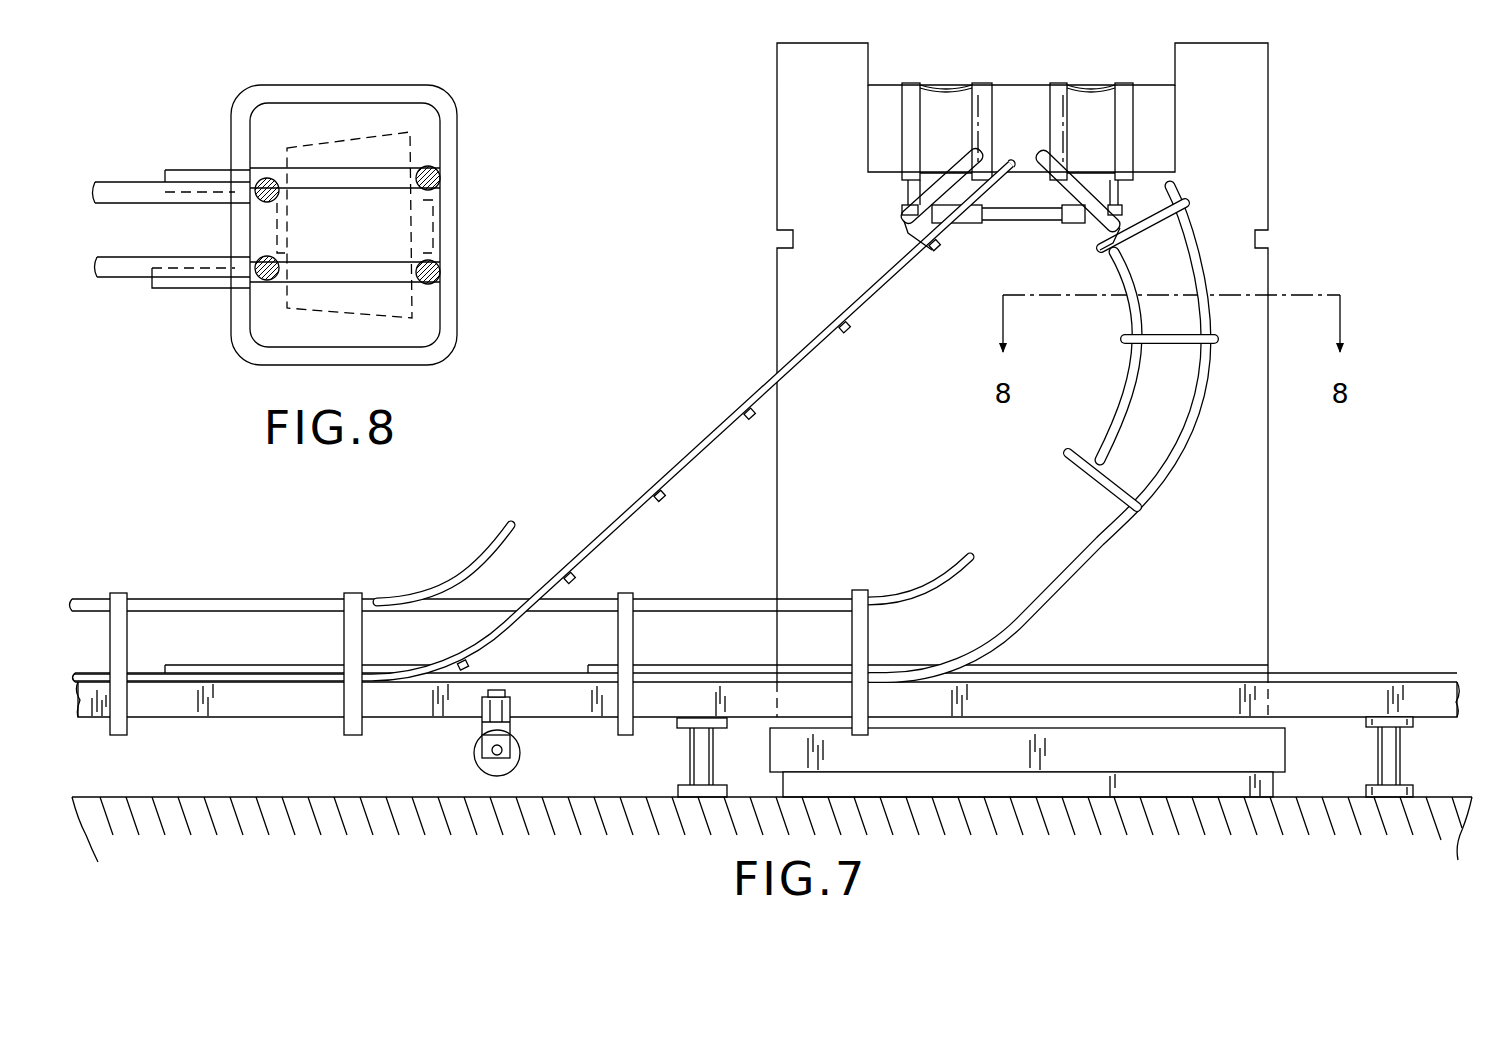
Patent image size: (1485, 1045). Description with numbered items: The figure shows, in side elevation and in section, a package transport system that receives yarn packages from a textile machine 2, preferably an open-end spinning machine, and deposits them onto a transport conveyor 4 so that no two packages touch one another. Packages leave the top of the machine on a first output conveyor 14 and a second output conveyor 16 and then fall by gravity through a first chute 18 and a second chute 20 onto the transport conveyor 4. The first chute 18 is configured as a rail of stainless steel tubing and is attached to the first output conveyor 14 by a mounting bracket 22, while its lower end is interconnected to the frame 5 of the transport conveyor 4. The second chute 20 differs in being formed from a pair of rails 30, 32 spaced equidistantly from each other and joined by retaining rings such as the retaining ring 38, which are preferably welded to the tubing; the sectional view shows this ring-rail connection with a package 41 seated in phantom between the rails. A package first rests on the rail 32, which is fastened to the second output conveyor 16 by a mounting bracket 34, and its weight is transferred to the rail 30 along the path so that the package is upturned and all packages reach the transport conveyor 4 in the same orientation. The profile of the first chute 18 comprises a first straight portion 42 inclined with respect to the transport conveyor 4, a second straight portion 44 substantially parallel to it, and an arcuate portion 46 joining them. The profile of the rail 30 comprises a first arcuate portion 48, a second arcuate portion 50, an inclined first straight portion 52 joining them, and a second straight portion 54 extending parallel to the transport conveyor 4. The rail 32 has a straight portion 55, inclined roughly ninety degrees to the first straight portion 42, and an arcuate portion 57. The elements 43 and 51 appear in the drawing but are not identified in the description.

In FIG. 7, the textile machine 2 is at (831, 58).
In FIG. 7, the transport conveyor 4 is at (1306, 672).
In FIG. 7, the frame 5 is at (1321, 708).
In FIG. 7, the first output conveyor 14 is at (946, 102).
In FIG. 7, the second output conveyor 16 is at (1097, 102).
In FIG. 7, the first chute 18 is at (634, 462).
In FIG. 7, the second chute 20 is at (1062, 411).
In FIG. 7, the mounting bracket 22 is at (905, 213).
In FIG. 7, the rail 30 is at (1192, 465).
In FIG. 8, the rail 30 is at (449, 182).
In FIG. 7, the rail 32 is at (1106, 372).
In FIG. 8, the rail 32 is at (98, 205).
In FIG. 7, the mounting bracket 34 is at (1102, 222).
In FIG. 7, the retaining ring 38 is at (1152, 352).
In FIG. 8, the retaining ring 38 is at (457, 136).
In FIG. 8, the package 41 is at (338, 303).
In FIG. 7, the first straight portion 42 is at (745, 408).
In FIG. 7, the tube stub 43 is at (954, 566).
In FIG. 7, the second straight portion 44 is at (230, 662).
In FIG. 7, the arcuate portion 46 is at (467, 643).
In FIG. 7, the first arcuate portion 48 is at (1196, 240).
In FIG. 7, the second arcuate portion 50 is at (1002, 633).
In FIG. 7, the tube stub 51 is at (502, 530).
In FIG. 7, the first straight portion 52 is at (1086, 544).
In FIG. 7, the second straight portion 54 is at (714, 665).
In FIG. 7, the straight portion 55 is at (1068, 182).
In FIG. 7, the arcuate portion 57 is at (1104, 422).